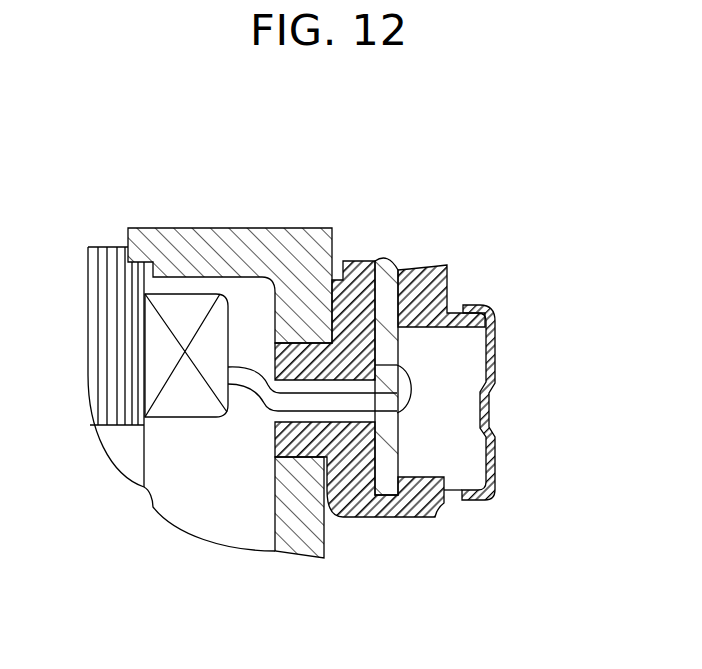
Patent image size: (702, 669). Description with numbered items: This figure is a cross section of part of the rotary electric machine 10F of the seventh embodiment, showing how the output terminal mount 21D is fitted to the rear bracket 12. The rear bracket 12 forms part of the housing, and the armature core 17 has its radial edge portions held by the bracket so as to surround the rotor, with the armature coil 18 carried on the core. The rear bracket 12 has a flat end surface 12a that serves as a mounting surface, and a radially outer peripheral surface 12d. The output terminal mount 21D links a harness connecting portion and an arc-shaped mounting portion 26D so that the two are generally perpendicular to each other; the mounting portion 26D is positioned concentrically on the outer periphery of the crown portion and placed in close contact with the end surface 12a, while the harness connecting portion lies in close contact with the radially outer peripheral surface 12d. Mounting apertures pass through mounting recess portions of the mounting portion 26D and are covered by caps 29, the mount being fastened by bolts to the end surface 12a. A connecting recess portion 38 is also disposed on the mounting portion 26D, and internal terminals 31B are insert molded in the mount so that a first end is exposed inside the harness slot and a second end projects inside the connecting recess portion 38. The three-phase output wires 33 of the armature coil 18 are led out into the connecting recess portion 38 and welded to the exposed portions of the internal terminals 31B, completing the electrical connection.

The rotary electric machine 10F is at (92, 93).
The rear bracket 12 is at (297, 554).
The end surface 12a is at (323, 535).
The radially outer peripheral surface 12d is at (247, 228).
The armature core 17 is at (112, 257).
The armature coil 18 is at (185, 313).
The three-phase output wires 33 is at (303, 400).
The internal terminals 31B is at (387, 274).
The output terminal mount 21D is at (470, 277).
The mounting portion 26D is at (443, 518).
The connecting recess portion 38 is at (459, 352).
The caps 29 is at (493, 450).